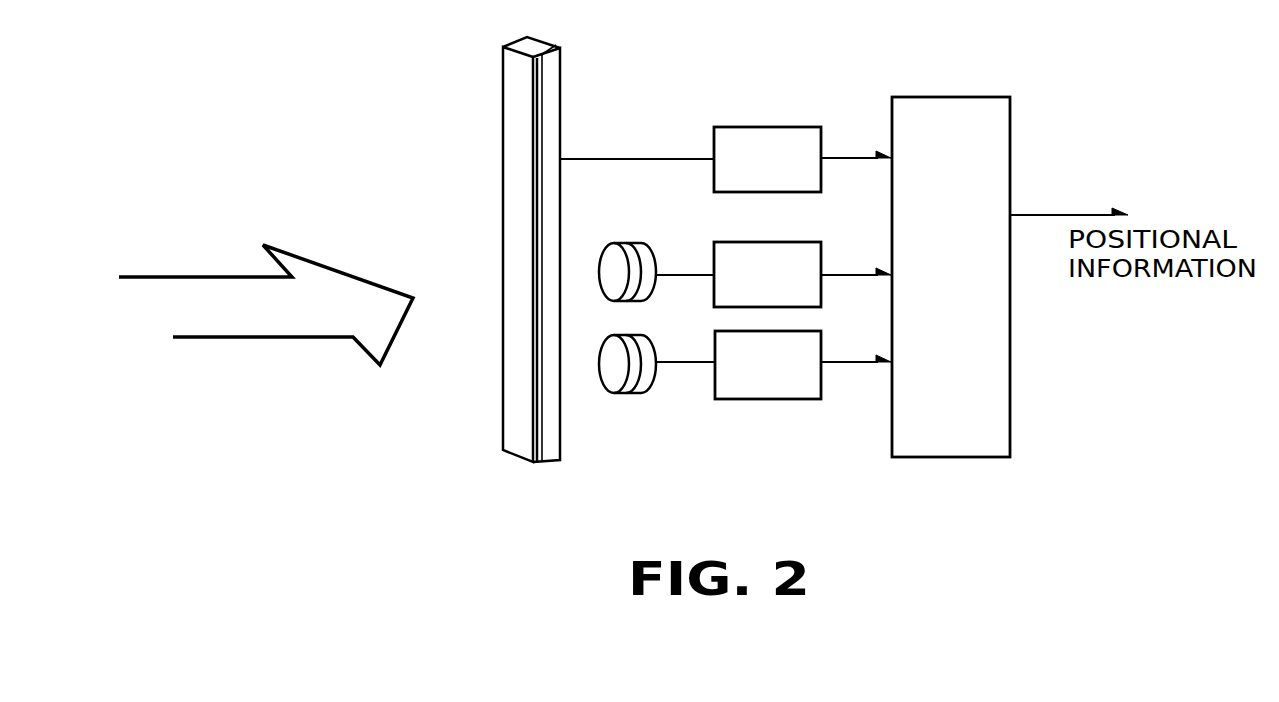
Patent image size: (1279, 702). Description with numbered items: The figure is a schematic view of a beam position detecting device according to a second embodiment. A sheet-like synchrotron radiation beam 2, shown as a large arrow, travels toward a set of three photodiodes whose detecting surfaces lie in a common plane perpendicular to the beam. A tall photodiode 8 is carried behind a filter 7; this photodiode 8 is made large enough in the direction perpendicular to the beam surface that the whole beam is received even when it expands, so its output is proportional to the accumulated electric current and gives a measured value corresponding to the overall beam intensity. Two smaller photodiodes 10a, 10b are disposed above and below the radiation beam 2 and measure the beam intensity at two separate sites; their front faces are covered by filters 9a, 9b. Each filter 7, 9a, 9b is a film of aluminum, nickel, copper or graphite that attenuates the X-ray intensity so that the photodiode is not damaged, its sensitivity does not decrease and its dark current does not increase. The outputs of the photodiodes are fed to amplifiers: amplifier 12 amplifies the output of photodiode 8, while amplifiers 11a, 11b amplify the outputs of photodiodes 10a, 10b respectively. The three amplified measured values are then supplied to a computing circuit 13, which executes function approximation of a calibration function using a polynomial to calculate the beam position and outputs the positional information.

The radiation beam 2 is at (267, 338).
The filter 7 is at (515, 450).
The photodiode 8 is at (550, 452).
The filter 9a is at (612, 255).
The filter 9b is at (615, 385).
The photodiode 10a is at (643, 253).
The photodiode 10b is at (643, 385).
The amplifier 11a is at (768, 241).
The amplifier 11b is at (775, 399).
The amplifier 12 is at (780, 127).
The computing circuit 13 is at (970, 97).